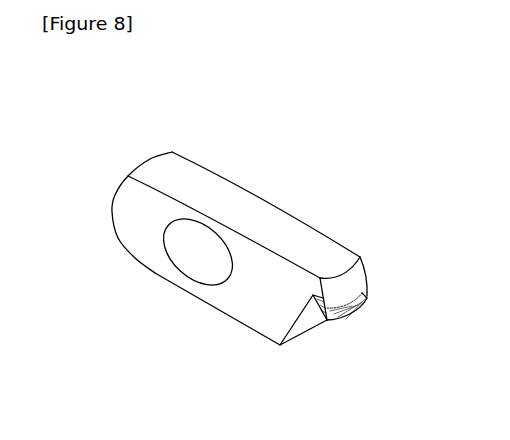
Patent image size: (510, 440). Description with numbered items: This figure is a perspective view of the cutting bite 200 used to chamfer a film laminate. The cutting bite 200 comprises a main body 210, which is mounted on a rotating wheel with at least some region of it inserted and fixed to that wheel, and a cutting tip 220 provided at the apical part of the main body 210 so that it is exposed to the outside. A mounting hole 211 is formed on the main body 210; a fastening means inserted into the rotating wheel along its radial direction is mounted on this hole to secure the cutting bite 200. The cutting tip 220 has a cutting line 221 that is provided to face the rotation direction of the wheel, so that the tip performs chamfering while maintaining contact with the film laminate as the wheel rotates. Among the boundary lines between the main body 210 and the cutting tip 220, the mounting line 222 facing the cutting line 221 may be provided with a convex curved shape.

The cutting bite 200 is at (84, 97).
The main body 210 is at (200, 181).
The mounting hole 211 is at (185, 272).
The cutting tip 220 is at (381, 324).
The cutting line 221 is at (350, 314).
The mounting line 222 is at (354, 298).